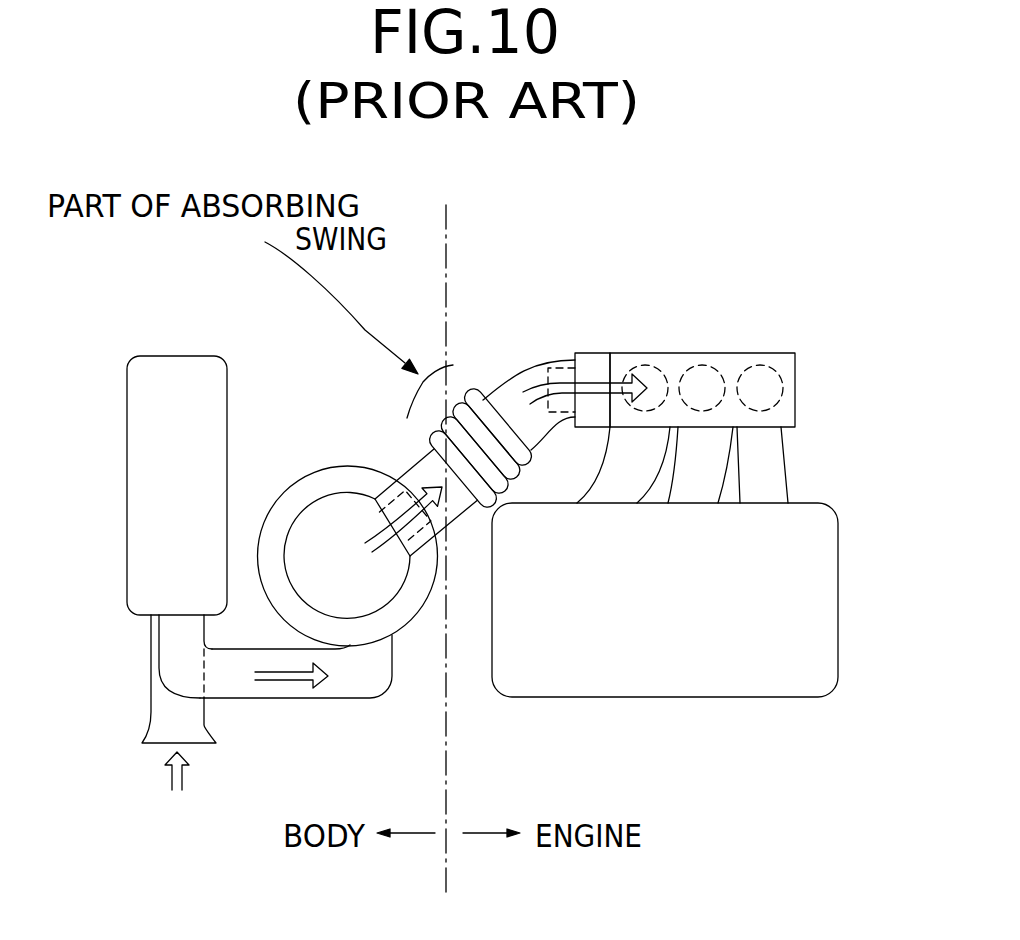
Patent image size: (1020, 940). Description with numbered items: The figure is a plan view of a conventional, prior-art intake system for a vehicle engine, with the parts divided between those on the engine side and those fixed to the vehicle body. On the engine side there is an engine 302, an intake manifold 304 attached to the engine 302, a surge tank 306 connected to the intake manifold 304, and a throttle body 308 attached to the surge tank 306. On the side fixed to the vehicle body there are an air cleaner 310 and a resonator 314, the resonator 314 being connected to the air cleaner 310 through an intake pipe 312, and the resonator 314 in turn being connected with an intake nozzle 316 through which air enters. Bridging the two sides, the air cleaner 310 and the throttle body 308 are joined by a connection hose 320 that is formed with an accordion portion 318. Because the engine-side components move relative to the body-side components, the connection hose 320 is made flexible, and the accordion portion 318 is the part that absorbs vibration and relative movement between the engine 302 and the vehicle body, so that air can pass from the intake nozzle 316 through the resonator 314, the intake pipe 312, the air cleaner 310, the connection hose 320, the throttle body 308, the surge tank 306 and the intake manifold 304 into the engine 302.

The engine 302 is at (753, 685).
The intake manifold 304 is at (792, 456).
The surge tank 306 is at (740, 355).
The throttle body 308 is at (592, 380).
The air cleaner 310 is at (325, 478).
The intake pipe 312 is at (250, 690).
The resonator 314 is at (145, 527).
The intake nozzle 316 is at (157, 713).
The accordion portion 318 is at (466, 385).
The connection hose 320 is at (514, 373).